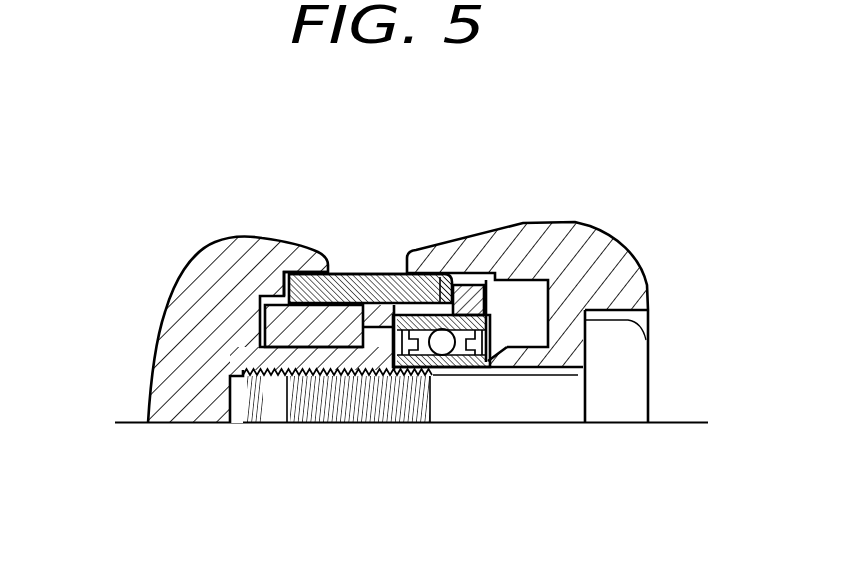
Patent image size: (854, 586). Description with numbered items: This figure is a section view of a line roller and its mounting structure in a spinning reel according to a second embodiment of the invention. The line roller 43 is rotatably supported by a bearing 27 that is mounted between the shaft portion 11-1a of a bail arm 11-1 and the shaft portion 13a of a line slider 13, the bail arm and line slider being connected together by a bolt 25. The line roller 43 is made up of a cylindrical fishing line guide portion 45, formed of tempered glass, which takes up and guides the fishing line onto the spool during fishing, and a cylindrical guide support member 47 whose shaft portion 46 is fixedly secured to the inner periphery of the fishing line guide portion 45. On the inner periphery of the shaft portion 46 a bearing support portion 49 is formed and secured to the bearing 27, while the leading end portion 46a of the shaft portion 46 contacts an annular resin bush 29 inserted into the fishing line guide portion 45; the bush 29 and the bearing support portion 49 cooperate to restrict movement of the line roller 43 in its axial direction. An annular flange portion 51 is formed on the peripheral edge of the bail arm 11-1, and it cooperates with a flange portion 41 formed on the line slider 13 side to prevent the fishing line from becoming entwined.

The line slider 13 is at (149, 373).
The shaft portion of the line slider 13a is at (368, 372).
The bush 29 is at (328, 374).
The flange portion 41 is at (320, 266).
The line roller 43 is at (345, 274).
The fishing line guide portion 45 is at (283, 284).
The shaft portion of the guide support member 46 is at (433, 270).
The leading end portion 46a is at (288, 294).
The guide support member 47 is at (437, 294).
The flange portion 51 is at (429, 303).
The bearing support portion 49 is at (408, 370).
The bearing 27 is at (445, 357).
The bolt 25 is at (640, 362).
The bail arm 11-1 is at (553, 361).
The shaft portion of the bail arm 11-1a is at (503, 376).